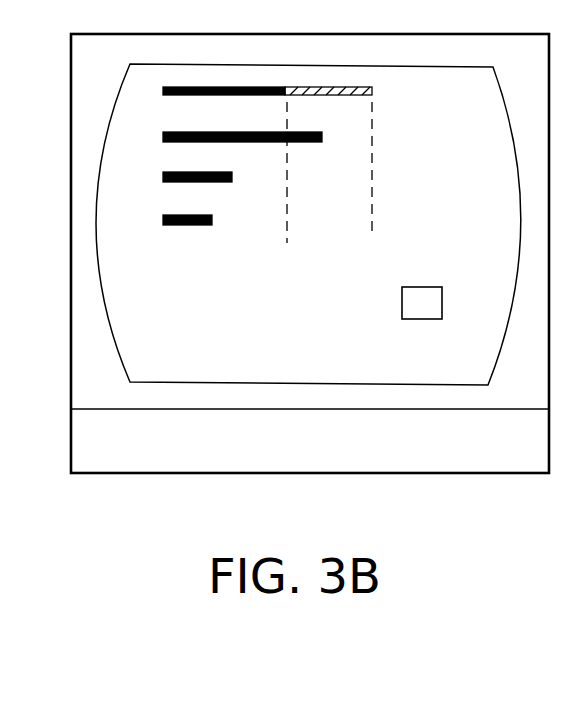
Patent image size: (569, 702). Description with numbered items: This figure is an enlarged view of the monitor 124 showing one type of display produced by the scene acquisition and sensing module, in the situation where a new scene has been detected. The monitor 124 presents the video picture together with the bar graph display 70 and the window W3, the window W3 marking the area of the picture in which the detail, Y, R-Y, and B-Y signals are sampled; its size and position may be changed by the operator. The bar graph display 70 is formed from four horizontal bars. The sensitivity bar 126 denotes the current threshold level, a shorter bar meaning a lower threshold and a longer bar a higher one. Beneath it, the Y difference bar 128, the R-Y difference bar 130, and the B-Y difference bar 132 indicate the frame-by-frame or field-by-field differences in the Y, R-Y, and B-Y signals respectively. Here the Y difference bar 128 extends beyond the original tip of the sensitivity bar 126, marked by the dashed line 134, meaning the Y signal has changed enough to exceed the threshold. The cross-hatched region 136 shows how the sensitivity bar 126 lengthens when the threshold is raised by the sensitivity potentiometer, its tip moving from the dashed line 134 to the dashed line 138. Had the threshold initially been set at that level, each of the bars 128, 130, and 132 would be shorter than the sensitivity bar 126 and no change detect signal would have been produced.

The monitor 124 is at (493, 474).
The bar graph display 70 is at (165, 238).
The sensitivity bar 126 is at (163, 91).
The Y difference bar 128 is at (163, 137).
The R-Y difference bar 130 is at (163, 178).
The B-Y difference bar 132 is at (163, 219).
The dashed line 134 is at (287, 243).
The cross-hatched region 136 is at (373, 91).
The dashed line 138 is at (372, 175).
The window W3 is at (442, 302).